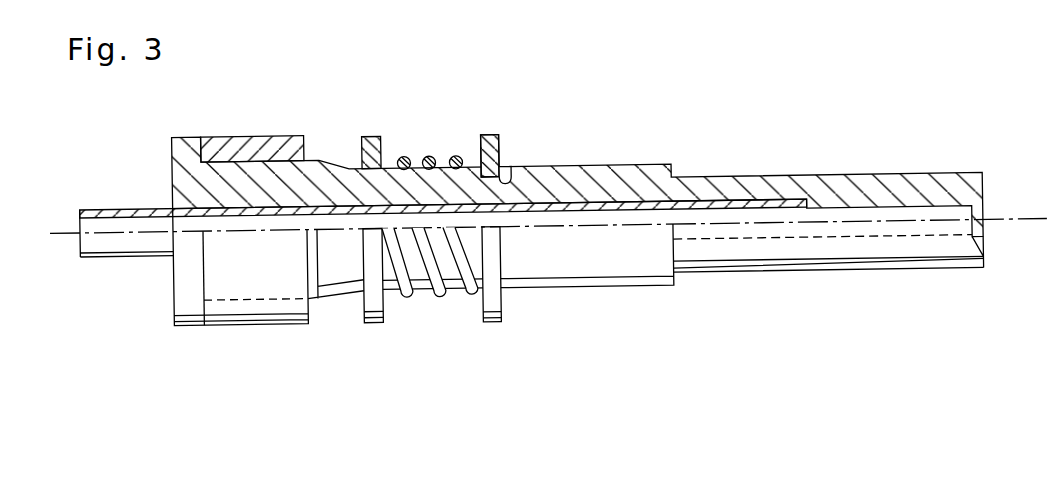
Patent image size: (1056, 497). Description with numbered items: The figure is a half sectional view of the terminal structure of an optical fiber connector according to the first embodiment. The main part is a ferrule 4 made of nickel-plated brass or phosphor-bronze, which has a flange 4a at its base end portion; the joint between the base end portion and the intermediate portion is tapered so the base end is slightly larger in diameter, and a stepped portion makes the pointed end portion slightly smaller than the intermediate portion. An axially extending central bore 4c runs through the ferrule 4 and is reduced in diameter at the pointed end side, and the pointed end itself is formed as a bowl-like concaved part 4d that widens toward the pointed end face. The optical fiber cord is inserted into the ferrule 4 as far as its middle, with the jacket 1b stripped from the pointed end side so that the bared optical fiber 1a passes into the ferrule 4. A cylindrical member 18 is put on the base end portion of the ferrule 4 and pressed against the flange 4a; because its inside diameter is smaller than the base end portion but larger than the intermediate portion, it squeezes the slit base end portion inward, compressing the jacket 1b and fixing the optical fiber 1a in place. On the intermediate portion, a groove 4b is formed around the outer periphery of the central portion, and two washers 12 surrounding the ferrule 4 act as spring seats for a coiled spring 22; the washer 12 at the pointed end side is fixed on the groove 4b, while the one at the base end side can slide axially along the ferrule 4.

The optical fiber 1a is at (88, 228).
The jacket 1b is at (121, 215).
The ferrule 4 is at (650, 159).
The flange 4a is at (182, 163).
The groove 4b is at (508, 170).
The central bore 4c is at (583, 204).
The bowl-like concaved part 4d is at (975, 202).
The washer 12 is at (370, 143).
The cylindrical member 18 is at (273, 146).
The coiled spring 22 is at (467, 152).